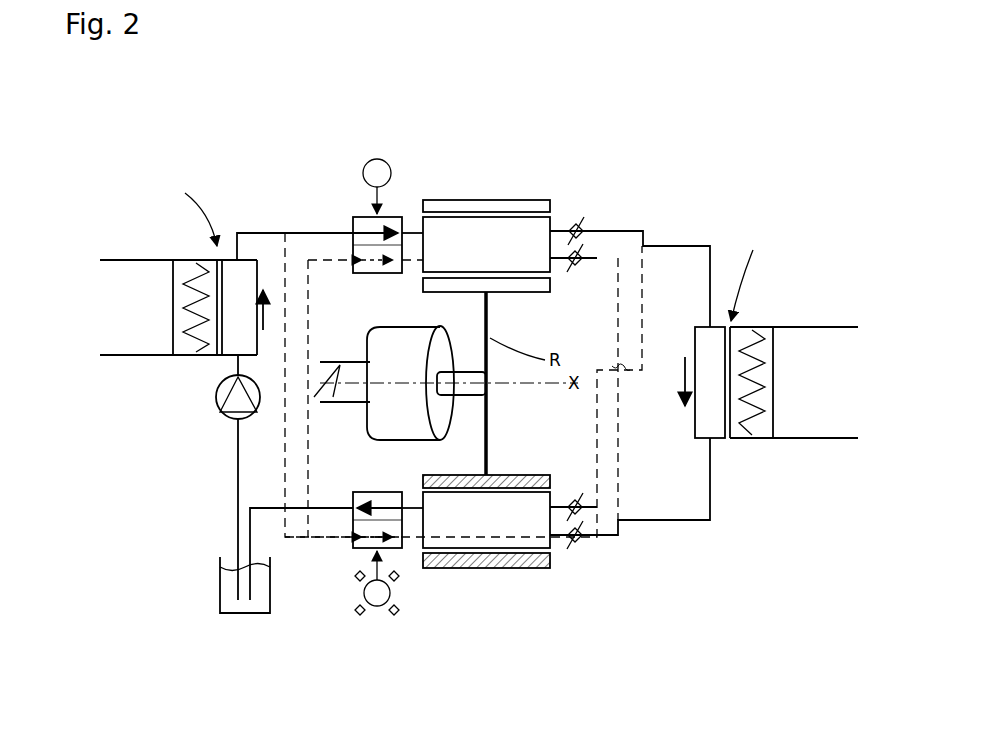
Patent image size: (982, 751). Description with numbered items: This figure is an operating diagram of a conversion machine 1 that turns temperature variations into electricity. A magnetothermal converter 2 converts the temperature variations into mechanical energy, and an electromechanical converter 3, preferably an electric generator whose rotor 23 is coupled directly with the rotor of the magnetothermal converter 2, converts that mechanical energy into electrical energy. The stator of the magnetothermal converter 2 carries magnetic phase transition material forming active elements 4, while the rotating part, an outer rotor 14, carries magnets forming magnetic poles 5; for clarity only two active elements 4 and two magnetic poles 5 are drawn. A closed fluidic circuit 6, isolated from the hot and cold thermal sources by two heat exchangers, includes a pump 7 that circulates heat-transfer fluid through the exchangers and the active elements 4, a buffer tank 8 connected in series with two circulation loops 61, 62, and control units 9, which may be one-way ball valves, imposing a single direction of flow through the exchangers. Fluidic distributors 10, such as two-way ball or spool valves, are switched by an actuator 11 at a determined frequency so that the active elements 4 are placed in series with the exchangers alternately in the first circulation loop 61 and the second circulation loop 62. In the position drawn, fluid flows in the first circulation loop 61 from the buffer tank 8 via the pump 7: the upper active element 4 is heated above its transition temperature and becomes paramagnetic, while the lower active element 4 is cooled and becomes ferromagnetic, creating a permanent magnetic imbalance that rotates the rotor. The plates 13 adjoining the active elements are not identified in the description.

The conversion machine 1 is at (199, 152).
The magnetothermal converter 2 is at (549, 171).
The electromechanical converter 3 is at (385, 407).
The active elements 4 is at (538, 243).
The magnetic poles 5 is at (455, 200).
The fluidic circuit 6 is at (721, 532).
The pump 7 is at (215, 397).
The buffer tank 8 is at (220, 582).
The control units 9 is at (583, 262).
The fluidic distributors 10 is at (352, 223).
The actuator 11 is at (372, 160).
The inner plate 13 is at (556, 290).
The outer rotor 14 is at (527, 194).
The rotor of the electric generator 23 is at (455, 396).
The first circulation loop 61 is at (267, 230).
The second circulation loop 62 is at (320, 541).